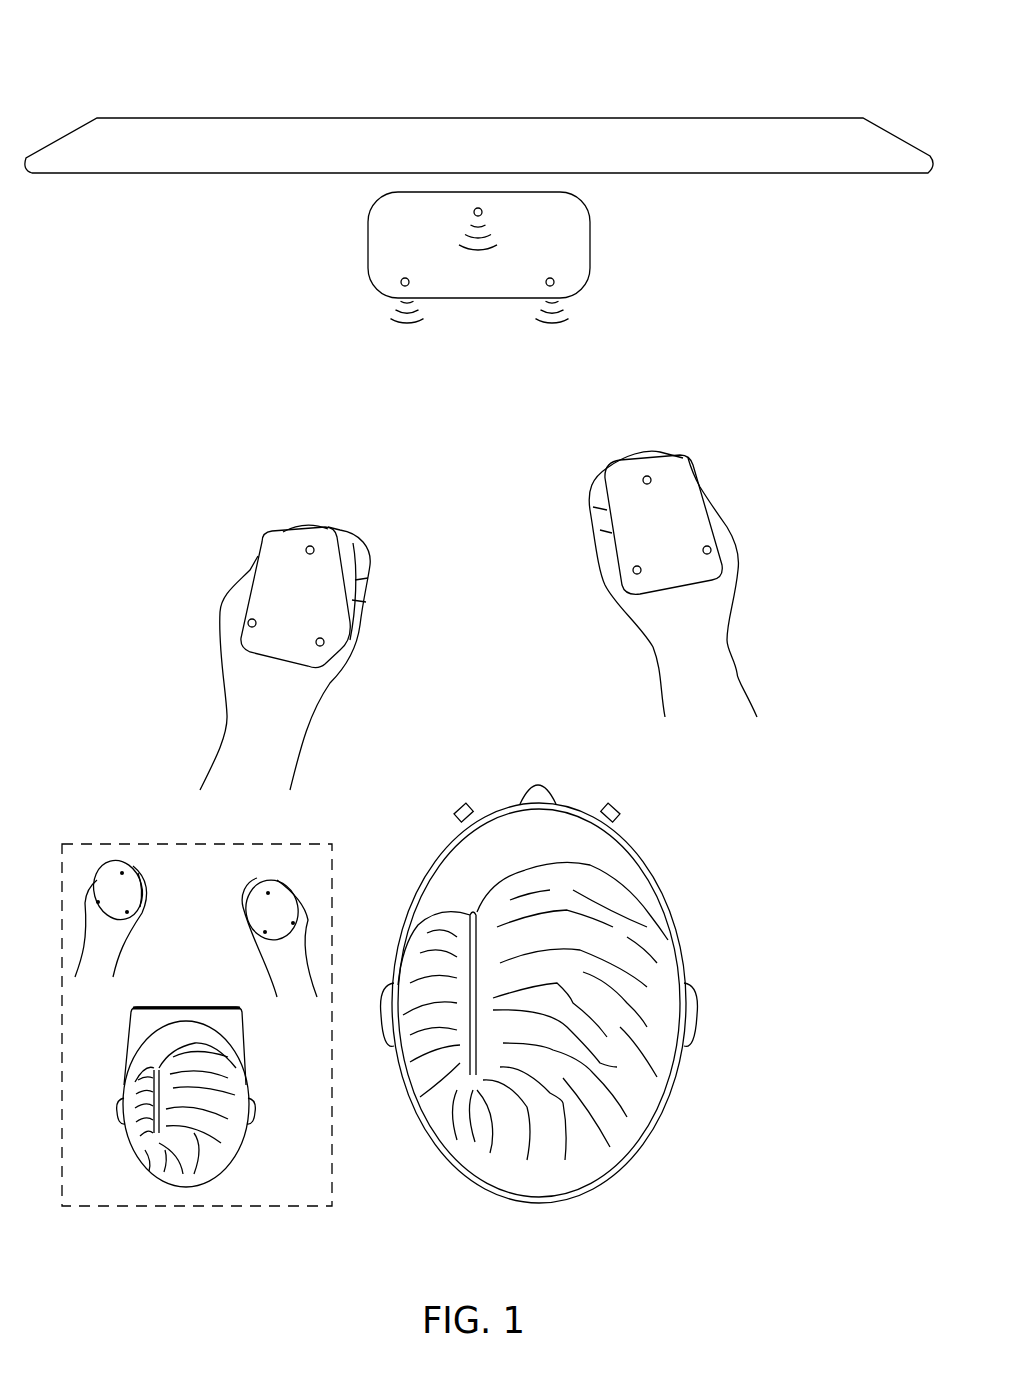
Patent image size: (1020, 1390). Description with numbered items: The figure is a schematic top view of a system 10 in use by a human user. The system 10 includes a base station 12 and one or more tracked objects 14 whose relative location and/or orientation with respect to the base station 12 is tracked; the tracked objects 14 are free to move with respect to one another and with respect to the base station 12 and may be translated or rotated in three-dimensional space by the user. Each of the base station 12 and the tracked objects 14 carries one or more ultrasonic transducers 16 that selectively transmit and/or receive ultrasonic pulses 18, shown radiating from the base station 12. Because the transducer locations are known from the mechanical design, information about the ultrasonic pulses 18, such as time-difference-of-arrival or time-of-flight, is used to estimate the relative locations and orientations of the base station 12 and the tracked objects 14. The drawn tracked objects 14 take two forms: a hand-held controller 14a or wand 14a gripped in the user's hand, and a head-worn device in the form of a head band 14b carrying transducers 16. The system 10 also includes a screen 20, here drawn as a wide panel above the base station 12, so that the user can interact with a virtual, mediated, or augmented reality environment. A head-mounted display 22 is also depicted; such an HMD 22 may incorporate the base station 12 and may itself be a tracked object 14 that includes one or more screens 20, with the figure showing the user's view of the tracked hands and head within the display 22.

The system 10 is at (150, 52).
The base station 12 is at (366, 212).
The tracked object 14 is at (253, 878).
The hand-held controller 14a is at (258, 535).
The head band 14b is at (646, 842).
The ultrasonic transducer 16 is at (398, 277).
The ultrasonic pulse 18 is at (374, 303).
The screen 20 is at (468, 159).
The head-mounted display 22 is at (127, 1018).